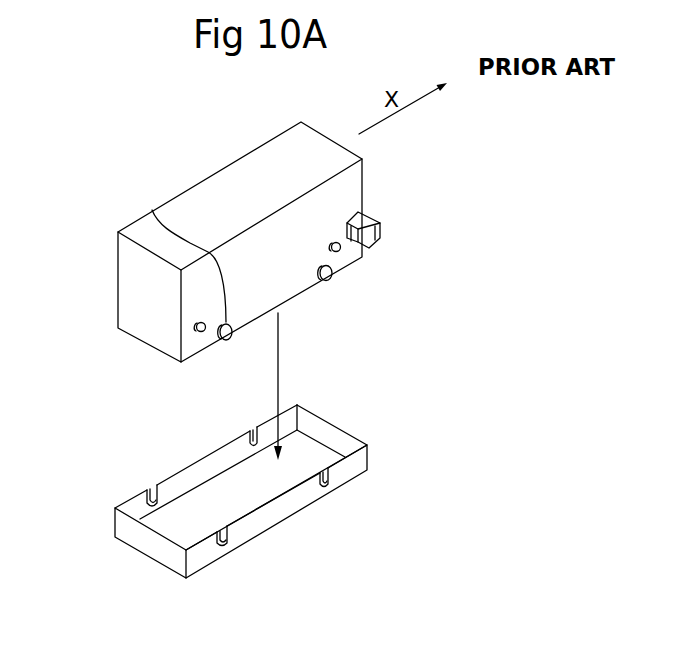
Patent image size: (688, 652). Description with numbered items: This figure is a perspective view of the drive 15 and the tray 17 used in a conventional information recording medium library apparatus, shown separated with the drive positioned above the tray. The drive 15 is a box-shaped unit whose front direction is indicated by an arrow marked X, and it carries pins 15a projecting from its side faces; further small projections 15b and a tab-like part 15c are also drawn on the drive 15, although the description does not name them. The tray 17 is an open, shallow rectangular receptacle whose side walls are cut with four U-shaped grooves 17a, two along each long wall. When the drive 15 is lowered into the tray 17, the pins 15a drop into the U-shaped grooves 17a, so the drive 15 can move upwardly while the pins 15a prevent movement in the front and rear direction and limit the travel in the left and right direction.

The drive 15 is at (248, 168).
The pins 15a is at (152, 210).
The pins 15b is at (194, 326).
The bracket tab 15c is at (380, 224).
The tray 17 is at (147, 558).
The U-shaped grooves 17a is at (250, 429).